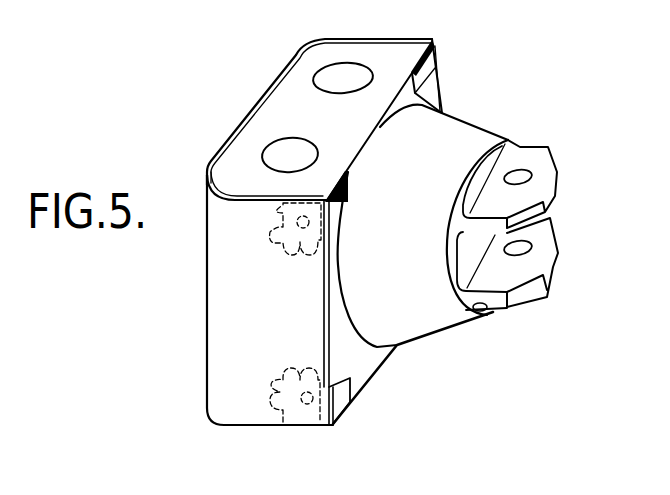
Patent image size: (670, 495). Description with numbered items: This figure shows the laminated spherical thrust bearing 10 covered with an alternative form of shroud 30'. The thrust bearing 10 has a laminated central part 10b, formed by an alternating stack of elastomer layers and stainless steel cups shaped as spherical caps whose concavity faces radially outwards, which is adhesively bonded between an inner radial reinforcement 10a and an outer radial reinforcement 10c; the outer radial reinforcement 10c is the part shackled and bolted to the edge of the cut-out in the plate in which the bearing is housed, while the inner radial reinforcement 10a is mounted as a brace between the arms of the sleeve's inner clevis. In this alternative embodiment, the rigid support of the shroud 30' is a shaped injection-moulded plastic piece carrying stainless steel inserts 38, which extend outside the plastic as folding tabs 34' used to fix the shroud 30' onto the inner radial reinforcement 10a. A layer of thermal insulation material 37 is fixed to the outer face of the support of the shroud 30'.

The laminated spherical thrust bearing 10 is at (490, 118).
The inner radial reinforcement 10a is at (357, 357).
The laminated central part 10b is at (408, 303).
The outer radial reinforcement 10c is at (540, 174).
The shroud 30' is at (279, 120).
The folding tabs 34' is at (419, 253).
The layer of thermal insulation material 37 is at (242, 325).
The stainless steel inserts 38 is at (272, 242).